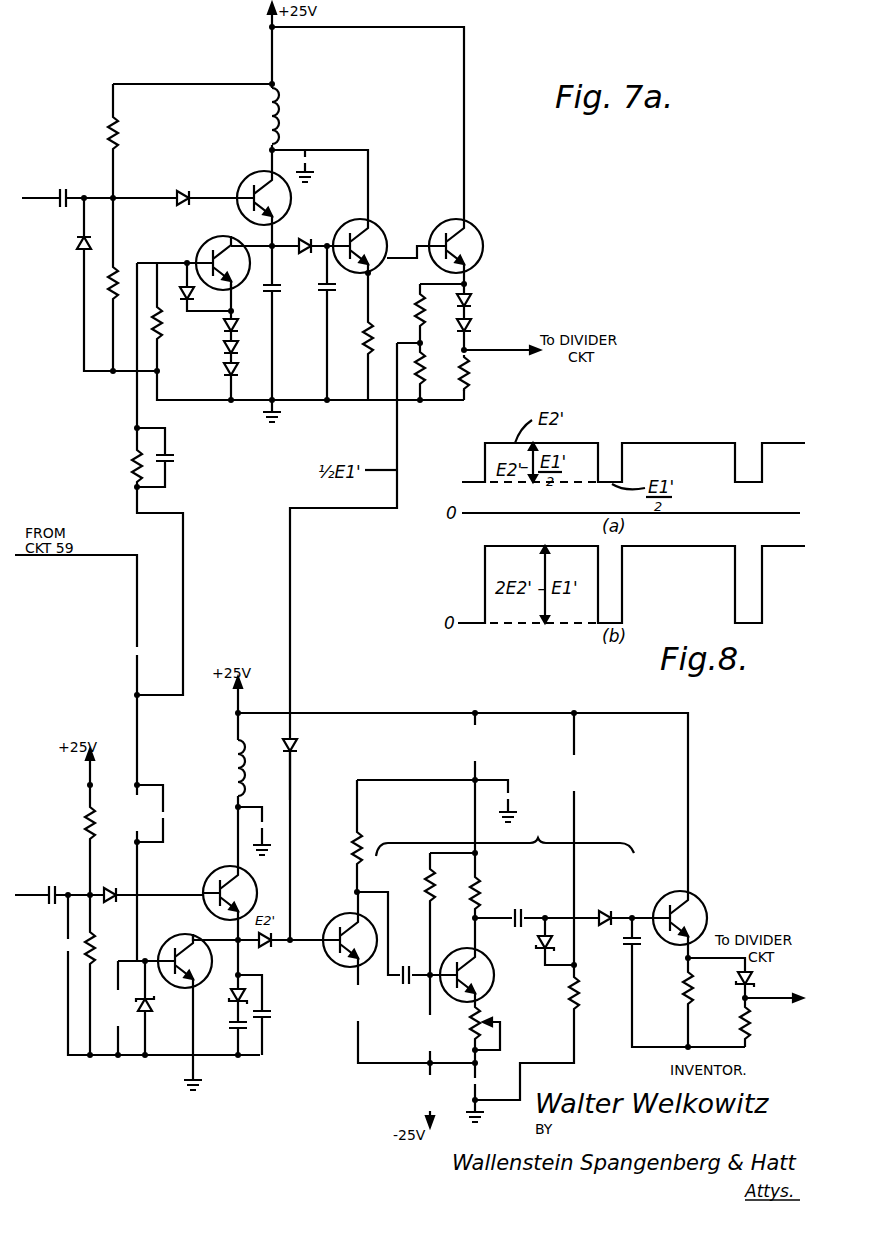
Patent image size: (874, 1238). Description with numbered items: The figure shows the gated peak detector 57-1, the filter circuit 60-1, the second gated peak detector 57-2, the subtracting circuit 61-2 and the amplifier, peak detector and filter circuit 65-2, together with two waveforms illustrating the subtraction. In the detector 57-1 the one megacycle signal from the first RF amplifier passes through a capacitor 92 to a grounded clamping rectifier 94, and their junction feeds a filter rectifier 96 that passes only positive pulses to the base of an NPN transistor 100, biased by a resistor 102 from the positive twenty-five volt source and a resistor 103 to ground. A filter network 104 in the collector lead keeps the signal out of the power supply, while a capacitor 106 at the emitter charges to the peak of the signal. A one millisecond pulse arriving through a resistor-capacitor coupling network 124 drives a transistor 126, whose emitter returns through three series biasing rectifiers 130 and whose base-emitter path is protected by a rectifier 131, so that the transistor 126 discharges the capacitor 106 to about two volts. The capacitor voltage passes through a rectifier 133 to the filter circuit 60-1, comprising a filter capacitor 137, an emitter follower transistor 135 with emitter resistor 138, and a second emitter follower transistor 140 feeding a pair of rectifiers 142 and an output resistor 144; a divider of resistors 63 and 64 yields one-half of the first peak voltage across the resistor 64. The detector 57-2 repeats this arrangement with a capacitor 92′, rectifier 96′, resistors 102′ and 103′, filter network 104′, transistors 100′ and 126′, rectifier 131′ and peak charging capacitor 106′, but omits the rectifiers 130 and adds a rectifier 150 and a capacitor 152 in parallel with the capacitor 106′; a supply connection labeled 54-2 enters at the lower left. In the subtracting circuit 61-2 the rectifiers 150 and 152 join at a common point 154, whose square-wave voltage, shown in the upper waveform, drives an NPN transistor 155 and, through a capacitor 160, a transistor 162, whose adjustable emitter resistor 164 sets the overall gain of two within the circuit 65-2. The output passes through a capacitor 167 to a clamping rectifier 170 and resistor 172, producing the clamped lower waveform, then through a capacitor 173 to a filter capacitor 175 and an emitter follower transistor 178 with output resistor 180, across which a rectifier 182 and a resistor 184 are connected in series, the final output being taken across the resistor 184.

The gated peak detector 57-1 is at (208, 74).
The resistor 102 is at (108, 131).
The filter network 104 is at (262, 124).
The capacitor 92 is at (64, 192).
The filter rectifier 96 is at (190, 188).
The NPN transistor 100 is at (291, 211).
The clamping rectifier 94 is at (76, 243).
The NPN transistor 126 is at (205, 252).
The rectifier 131 is at (183, 284).
The resistor 103 is at (107, 288).
The series connected biasing rectifiers 130 is at (220, 353).
The peak charging capacitor 106 is at (264, 290).
The rectifier 133 is at (303, 254).
The filter capacitor 137 is at (322, 292).
The filter circuit 60-1 is at (368, 287).
The NPN transistor 135 is at (376, 224).
The transistor 140 is at (450, 226).
The resistor 63 is at (413, 303).
The emitter resistor 138 is at (365, 345).
The semi-conductor rectifiers 142 is at (470, 328).
The output resistor 144 is at (530, 386).
The resistor 64 is at (426, 372).
The resistor-capacitor coupling network 124 is at (168, 466).
The input circuit 54-2 is at (78, 720).
The gated peak detector 57-2 is at (192, 749).
The rectifier 150 is at (284, 748).
The filter network 104′ is at (228, 768).
The resistor 102′ is at (85, 830).
The capacitor 92′ is at (52, 886).
The filter rectifier 96′ is at (112, 888).
The resistor 103′ is at (96, 958).
The NPN transistor 100′ is at (222, 874).
The NPN transistor 126′ is at (173, 942).
The rectifier 131′ is at (152, 1012).
The peak charging capacitor 106′ is at (272, 1018).
The rectifier 152 is at (268, 948).
The subtracting circuit 61-2 is at (322, 784).
The common point 154 is at (298, 928).
The NPN transistor 155 is at (362, 915).
The amplifier, peak detector and filter circuit 65-2 is at (493, 865).
The capacitor 160 is at (404, 985).
The resistor 164 is at (470, 1022).
The NPN transistor 162 is at (490, 986).
The capacitor 167 is at (522, 906).
The clamping rectifier 170 is at (536, 945).
The capacitor 173 is at (610, 908).
The NPN transistor 178 is at (696, 906).
The filter capacitor 175 is at (620, 941).
The resistor 172 is at (586, 996).
The output resistor 180 is at (685, 990).
The rectifier 182 is at (738, 980).
The resistor 184 is at (803, 1041).